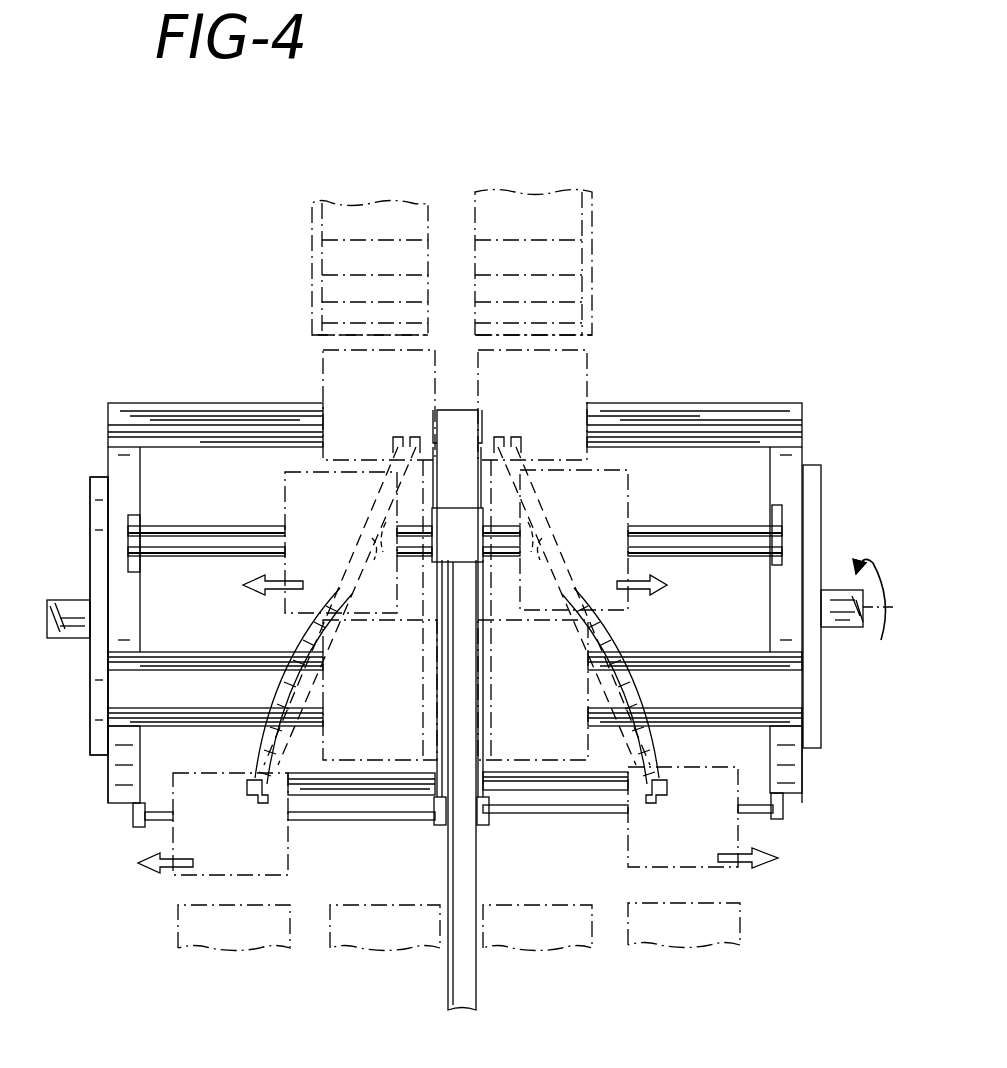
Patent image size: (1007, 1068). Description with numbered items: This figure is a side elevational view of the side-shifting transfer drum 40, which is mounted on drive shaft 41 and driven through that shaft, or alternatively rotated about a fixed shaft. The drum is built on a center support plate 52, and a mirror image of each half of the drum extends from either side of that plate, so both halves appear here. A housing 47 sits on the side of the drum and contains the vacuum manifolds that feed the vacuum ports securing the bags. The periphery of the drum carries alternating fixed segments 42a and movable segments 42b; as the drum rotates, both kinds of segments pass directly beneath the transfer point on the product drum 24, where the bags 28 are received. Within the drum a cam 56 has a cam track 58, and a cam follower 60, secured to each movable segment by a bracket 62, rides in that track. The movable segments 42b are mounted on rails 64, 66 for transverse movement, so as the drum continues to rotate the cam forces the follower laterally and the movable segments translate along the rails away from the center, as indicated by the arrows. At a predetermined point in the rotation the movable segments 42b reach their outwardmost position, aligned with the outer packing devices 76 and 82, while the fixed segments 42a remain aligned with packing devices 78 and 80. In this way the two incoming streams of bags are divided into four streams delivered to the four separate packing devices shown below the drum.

The product drum 24 is at (313, 305).
The bags 28 is at (590, 240).
The transfer drum 40 is at (818, 388).
The drive shaft 41 is at (75, 600).
The fixed segments 42a is at (323, 362).
The movable segments 42b is at (285, 485).
The housing 47 is at (90, 680).
The center support plate 52 is at (462, 860).
The cam 56 is at (314, 651).
The cam track 58 is at (355, 563).
The cam follower 60 is at (390, 530).
The bracket 62 is at (246, 795).
The rail 64 is at (185, 525).
The rail 66 is at (188, 558).
The packing device 76 is at (675, 953).
The packing device 78 is at (550, 953).
The packing device 80 is at (340, 953).
The packing device 82 is at (192, 953).